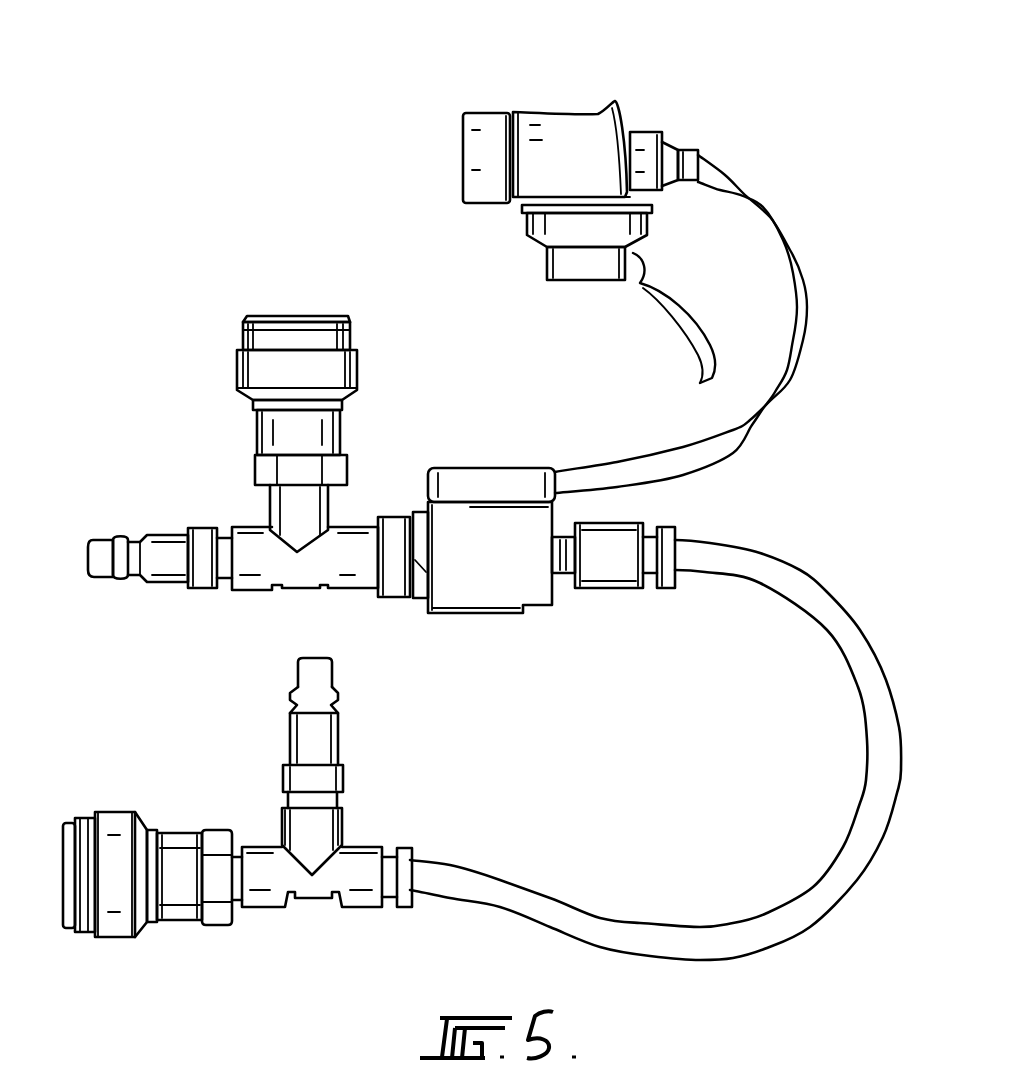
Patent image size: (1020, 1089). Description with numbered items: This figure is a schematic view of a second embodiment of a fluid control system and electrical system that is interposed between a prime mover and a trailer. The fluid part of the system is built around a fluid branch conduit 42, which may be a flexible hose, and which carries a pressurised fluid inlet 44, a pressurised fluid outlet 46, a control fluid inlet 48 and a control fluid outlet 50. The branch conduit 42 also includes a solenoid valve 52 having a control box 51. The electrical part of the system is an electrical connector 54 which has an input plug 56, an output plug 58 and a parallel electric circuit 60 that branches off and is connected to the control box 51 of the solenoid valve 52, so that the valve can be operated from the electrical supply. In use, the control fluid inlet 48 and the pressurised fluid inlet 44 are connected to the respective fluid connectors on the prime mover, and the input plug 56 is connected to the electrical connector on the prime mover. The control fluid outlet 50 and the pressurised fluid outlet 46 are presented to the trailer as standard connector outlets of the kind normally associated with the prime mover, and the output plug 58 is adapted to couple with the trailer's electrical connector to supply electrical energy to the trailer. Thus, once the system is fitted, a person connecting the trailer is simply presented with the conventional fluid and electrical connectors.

The fluid branch conduit 42 is at (877, 697).
The pressurised fluid inlet 44 is at (306, 657).
The pressurised fluid outlet 46 is at (64, 870).
The control fluid inlet 48 is at (320, 315).
The control fluid outlet 50 is at (89, 546).
The control box 51 is at (522, 473).
The solenoid valve 52 is at (497, 587).
The electrical connector 54 is at (551, 197).
The input plug 56 is at (462, 156).
The output plug 58 is at (600, 262).
The parallel electric circuit 60 is at (800, 270).